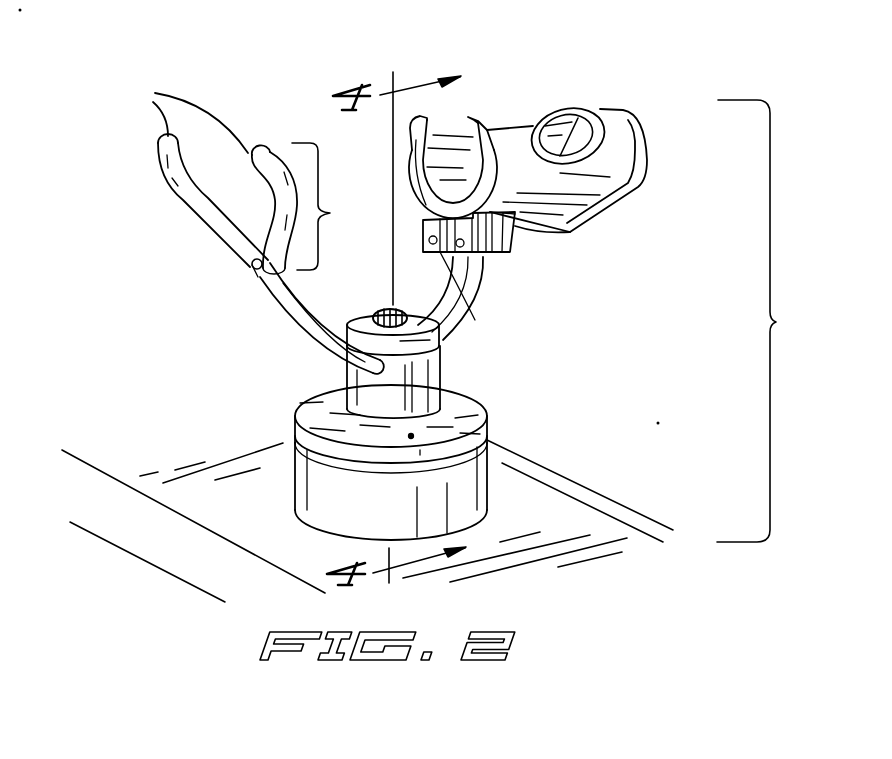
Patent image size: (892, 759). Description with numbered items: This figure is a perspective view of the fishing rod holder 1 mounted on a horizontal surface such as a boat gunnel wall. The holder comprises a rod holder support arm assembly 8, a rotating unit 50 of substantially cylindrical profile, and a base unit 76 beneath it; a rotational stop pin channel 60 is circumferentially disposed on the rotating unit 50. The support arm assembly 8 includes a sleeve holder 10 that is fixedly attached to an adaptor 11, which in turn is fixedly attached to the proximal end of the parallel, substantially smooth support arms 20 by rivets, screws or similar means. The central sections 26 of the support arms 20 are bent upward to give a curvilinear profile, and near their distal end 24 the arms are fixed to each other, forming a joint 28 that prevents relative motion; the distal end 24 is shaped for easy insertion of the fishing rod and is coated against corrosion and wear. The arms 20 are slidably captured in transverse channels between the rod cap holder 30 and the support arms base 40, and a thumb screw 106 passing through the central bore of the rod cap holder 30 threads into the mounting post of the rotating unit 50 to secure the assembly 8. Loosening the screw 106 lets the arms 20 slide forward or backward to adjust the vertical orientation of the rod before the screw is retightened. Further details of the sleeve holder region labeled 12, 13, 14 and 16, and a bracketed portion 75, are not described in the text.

The fishing rod holder 1 is at (604, 59).
The rod holder support arm assembly 8 is at (764, 321).
The sleeve holder 10 is at (660, 148).
The adaptor 11 is at (497, 252).
The clamp opening 12 is at (598, 107).
The support arm 13 is at (452, 256).
The clamp lower portion 14 is at (552, 238).
The clamp body 16 is at (647, 178).
The support arms 20 is at (256, 220).
The distal end 24 is at (179, 118).
The central sections 26 is at (307, 337).
The joint 28 is at (250, 268).
The rod cap holder 30 is at (445, 340).
The support arms base 40 is at (427, 380).
The rotating unit 50 is at (297, 430).
The rotational stop pin channel 60 is at (413, 436).
The fork assembly 75 is at (330, 206).
The base unit 76 is at (298, 500).
The thumb screw 106 is at (380, 308).